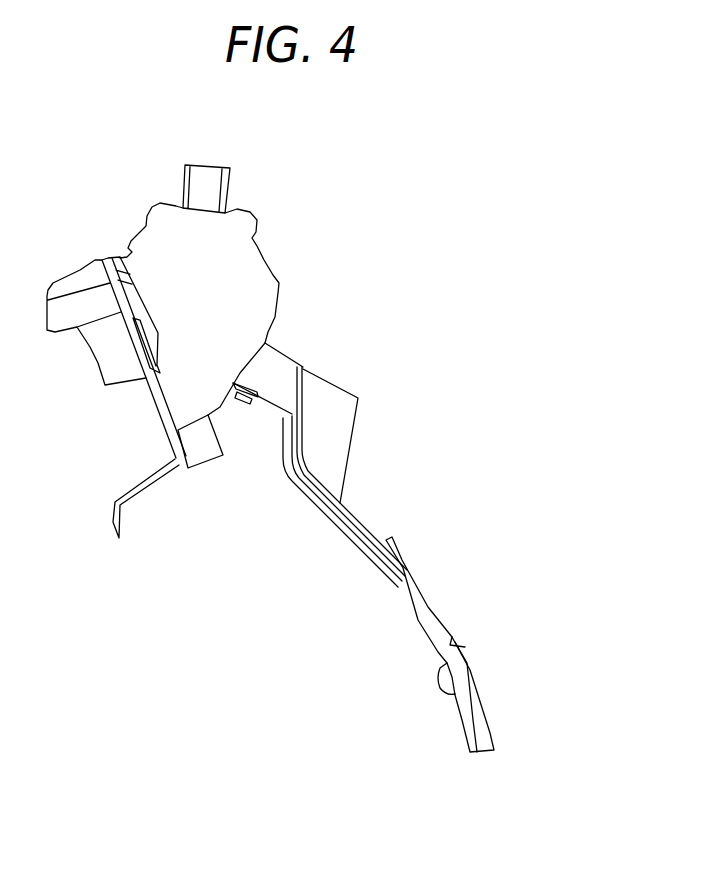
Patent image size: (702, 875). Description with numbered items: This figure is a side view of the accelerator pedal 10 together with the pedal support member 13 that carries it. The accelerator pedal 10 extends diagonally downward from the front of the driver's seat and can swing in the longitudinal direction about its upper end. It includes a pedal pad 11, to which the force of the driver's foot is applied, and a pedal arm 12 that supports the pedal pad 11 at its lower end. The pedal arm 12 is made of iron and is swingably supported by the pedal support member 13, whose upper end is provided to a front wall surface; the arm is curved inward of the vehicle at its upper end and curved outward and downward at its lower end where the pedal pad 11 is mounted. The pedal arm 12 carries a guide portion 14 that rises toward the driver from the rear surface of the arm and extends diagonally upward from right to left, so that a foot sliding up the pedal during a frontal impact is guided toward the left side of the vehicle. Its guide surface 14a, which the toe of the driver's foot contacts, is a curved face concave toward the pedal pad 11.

The accelerator pedal 10 is at (480, 542).
The pedal pad 11 is at (473, 695).
The pedal arm 12 is at (352, 524).
The pedal support member 13 is at (253, 285).
The guide portion 14 is at (378, 418).
The guide surface 14a is at (336, 402).